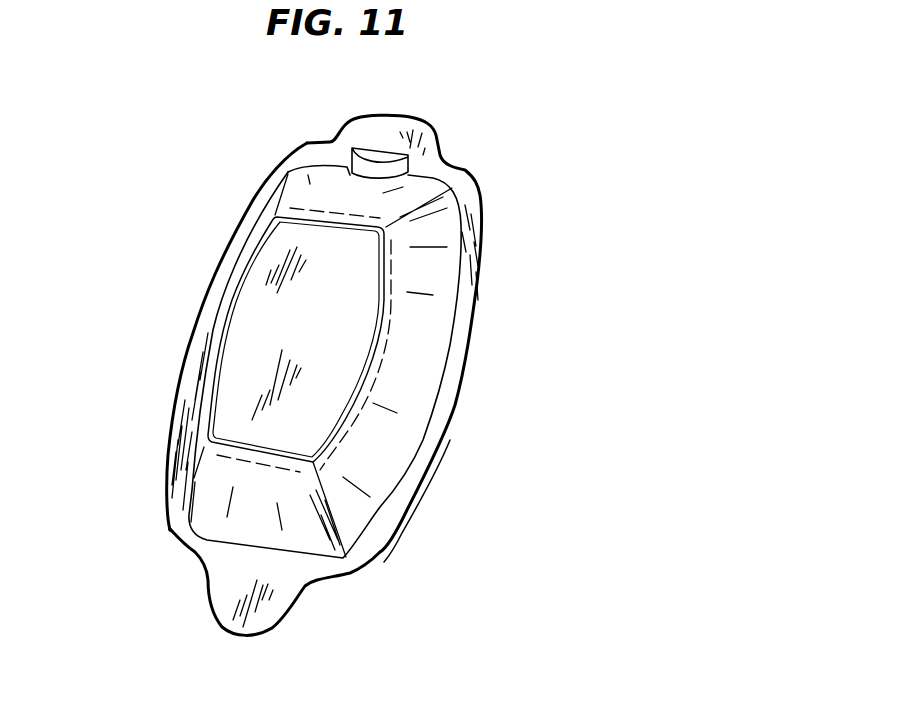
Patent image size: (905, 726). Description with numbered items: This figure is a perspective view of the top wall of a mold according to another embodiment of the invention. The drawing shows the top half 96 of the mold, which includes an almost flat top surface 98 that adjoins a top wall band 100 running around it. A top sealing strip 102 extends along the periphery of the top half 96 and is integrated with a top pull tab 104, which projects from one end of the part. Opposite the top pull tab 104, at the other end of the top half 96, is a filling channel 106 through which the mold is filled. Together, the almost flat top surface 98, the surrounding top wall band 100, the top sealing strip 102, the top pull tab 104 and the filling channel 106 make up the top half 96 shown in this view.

The top half 96 is at (240, 379).
The top surface 98 is at (288, 260).
The top wall band 100 is at (417, 367).
The top sealing strip 102 is at (490, 261).
The top pull tab 104 is at (247, 597).
The filling channel 106 is at (385, 122).